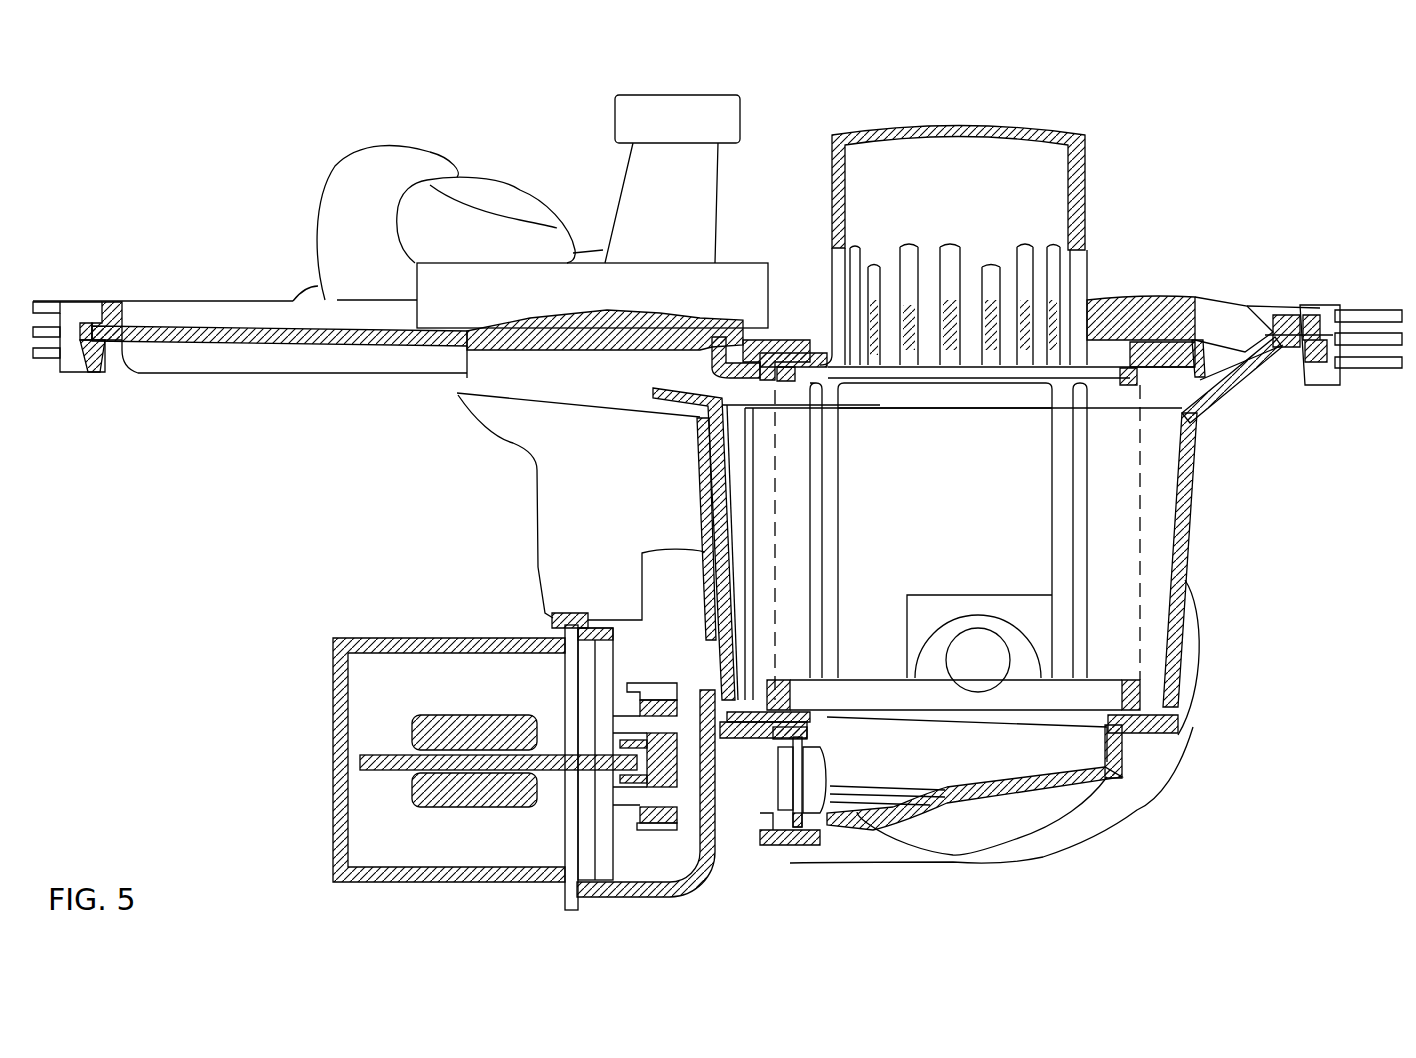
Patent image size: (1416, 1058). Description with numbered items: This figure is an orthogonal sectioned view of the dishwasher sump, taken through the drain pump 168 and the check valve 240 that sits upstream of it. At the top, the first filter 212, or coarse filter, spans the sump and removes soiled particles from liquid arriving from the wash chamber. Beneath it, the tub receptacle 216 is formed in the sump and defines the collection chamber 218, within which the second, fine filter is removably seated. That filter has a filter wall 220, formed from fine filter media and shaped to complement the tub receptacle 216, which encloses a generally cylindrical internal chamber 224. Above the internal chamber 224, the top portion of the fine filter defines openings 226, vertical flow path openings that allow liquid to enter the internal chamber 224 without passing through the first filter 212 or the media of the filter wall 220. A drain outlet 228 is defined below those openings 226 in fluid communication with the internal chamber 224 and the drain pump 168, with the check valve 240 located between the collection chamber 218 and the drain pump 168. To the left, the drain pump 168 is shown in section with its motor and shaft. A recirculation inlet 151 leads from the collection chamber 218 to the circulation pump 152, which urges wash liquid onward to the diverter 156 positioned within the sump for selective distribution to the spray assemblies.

The recirculation inlet 151 is at (913, 596).
The circulation pump 152 is at (1010, 625).
The diverter 156 is at (513, 445).
The drain pump 168 is at (365, 628).
The first filter 212 is at (540, 348).
The tub receptacle 216 is at (1182, 637).
The collection chamber 218 is at (1150, 537).
The filter wall 220 is at (1140, 484).
The internal chamber 224 is at (972, 477).
The openings 226 is at (1078, 282).
The drain outlet 228 is at (818, 766).
The check valve 240 is at (795, 820).